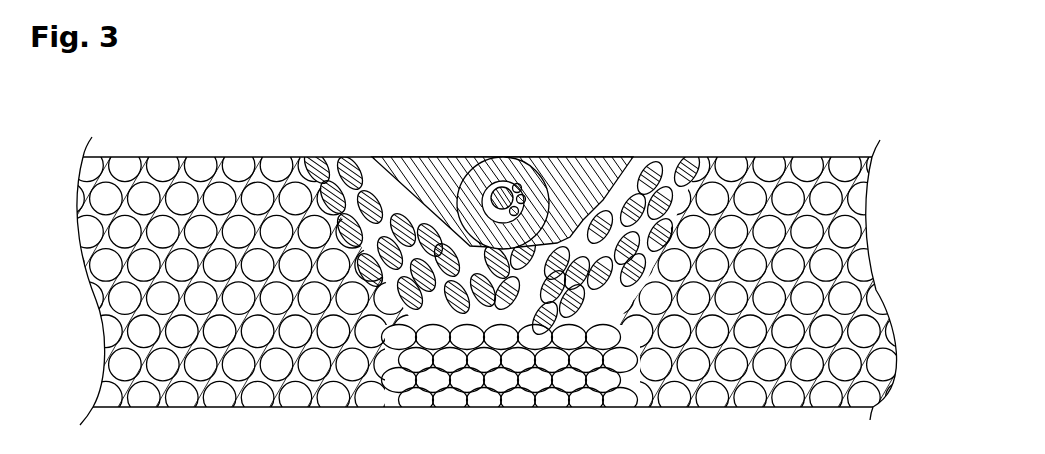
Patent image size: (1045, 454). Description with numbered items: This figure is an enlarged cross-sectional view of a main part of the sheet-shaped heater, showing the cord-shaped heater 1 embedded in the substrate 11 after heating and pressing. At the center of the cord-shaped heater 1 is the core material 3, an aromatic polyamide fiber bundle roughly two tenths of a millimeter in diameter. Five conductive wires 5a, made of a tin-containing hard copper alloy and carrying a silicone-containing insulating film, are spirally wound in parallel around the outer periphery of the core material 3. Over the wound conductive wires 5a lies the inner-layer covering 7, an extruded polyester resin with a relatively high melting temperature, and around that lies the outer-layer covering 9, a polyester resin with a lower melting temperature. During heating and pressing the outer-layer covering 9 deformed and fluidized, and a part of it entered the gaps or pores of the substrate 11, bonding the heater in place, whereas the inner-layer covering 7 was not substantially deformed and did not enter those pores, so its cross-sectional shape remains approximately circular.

The cord-shaped heater 1 is at (475, 165).
The core material 3 is at (503, 190).
The conductive wires 5a is at (535, 167).
The inner-layer covering 7 is at (483, 160).
The outer-layer covering 9 is at (458, 157).
The substrate 11 is at (866, 217).